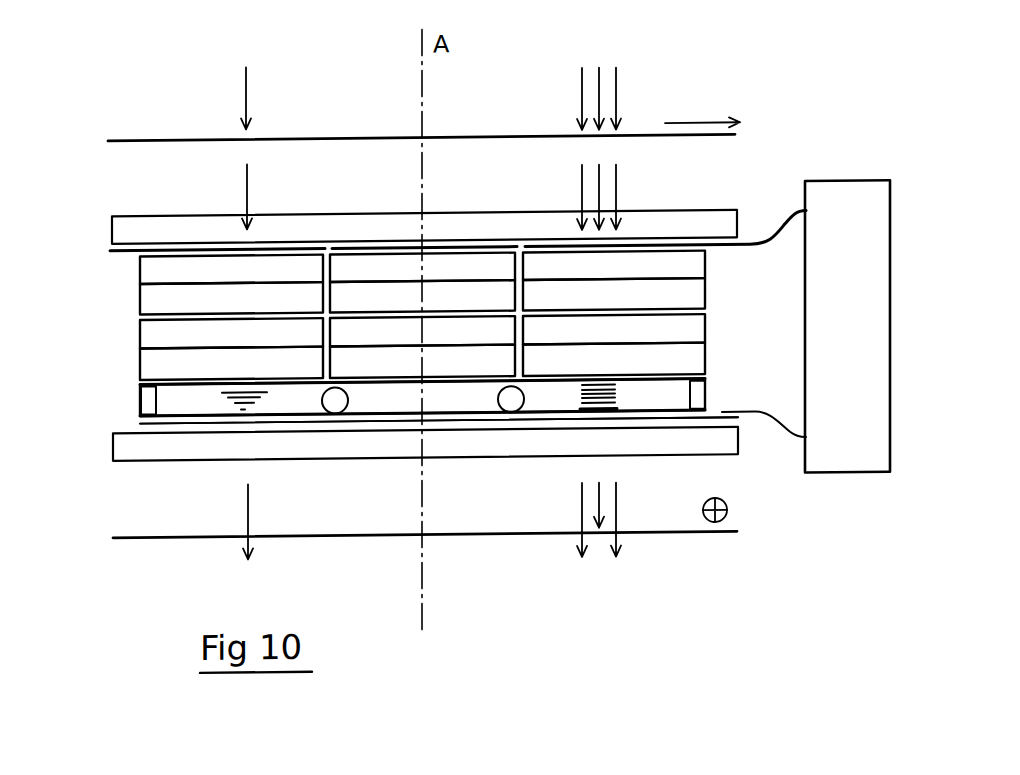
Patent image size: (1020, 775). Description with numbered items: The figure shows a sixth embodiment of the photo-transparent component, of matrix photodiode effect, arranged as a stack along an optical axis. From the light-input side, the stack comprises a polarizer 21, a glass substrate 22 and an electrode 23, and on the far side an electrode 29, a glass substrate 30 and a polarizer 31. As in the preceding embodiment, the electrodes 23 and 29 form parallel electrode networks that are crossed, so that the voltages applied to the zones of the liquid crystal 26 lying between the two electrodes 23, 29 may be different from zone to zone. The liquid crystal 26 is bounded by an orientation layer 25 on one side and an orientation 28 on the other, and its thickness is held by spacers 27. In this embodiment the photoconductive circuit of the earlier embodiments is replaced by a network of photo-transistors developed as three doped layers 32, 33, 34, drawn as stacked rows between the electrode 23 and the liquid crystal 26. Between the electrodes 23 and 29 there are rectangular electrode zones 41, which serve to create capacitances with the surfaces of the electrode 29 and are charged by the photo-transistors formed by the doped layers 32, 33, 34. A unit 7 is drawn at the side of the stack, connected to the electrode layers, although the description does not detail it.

The control unit 7 is at (864, 464).
The polarizer 21 is at (186, 142).
The glass substrate 22 is at (136, 218).
The uniform electrode 23 is at (140, 252).
The orientation layer 25 is at (142, 387).
The liquid crystal 26 is at (170, 398).
The spacers 27 is at (508, 408).
The orientation 28 is at (142, 425).
The uniform electrode 29 is at (165, 425).
The glass substrate 30 is at (160, 452).
The polarizer 31 is at (153, 539).
The doped layer 32 is at (157, 275).
The doped layer 33 is at (152, 300).
The doped layer 34 is at (160, 332).
The rectangular electrode zones 41 is at (157, 359).